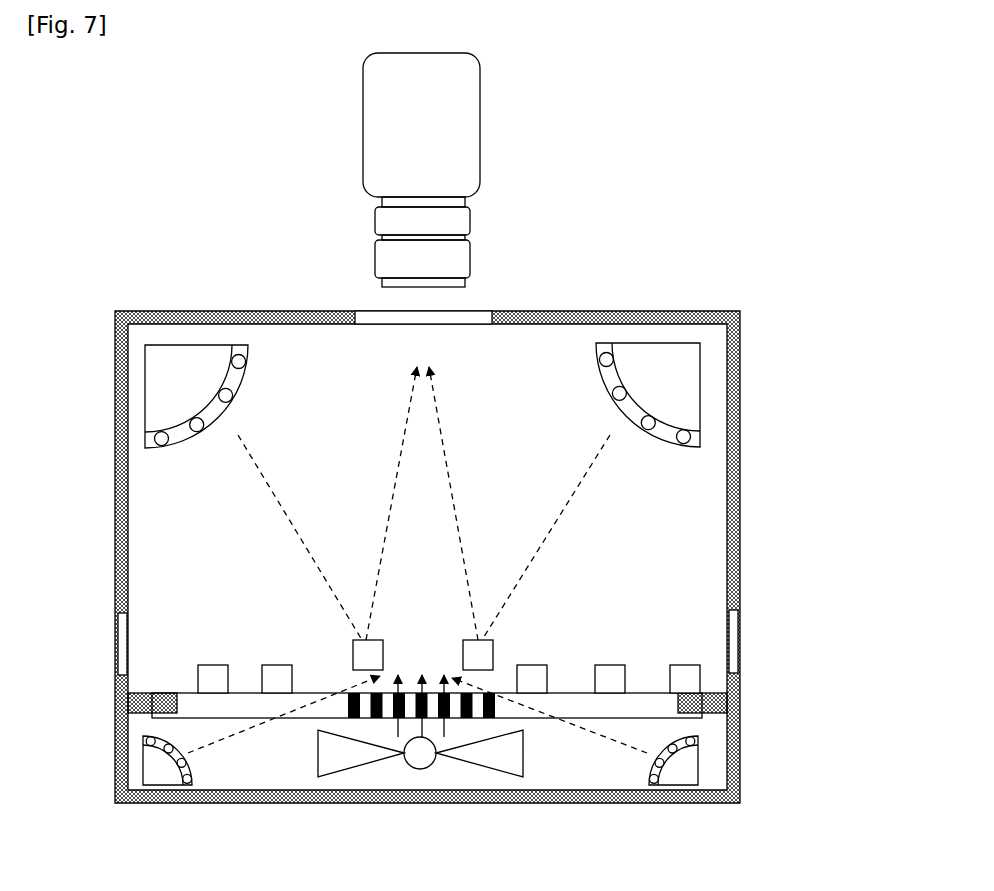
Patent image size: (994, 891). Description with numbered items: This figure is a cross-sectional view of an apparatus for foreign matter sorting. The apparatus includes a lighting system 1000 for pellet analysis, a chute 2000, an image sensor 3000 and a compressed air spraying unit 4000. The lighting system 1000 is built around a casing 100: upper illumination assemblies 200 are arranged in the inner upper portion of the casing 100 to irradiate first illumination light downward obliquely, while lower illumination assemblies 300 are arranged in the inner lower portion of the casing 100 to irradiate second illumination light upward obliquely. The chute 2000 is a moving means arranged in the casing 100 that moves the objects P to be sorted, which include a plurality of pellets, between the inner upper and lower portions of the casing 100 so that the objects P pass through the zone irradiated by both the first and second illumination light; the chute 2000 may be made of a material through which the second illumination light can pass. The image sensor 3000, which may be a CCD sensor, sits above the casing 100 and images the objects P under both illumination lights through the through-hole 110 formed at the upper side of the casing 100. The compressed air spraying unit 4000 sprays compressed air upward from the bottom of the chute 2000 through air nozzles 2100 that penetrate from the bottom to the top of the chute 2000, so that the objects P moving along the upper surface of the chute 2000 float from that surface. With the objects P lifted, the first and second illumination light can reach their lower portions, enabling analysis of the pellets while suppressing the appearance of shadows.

The lighting system 1000 is at (783, 266).
The image sensor 3000 is at (478, 125).
The casing 100 is at (647, 311).
The through-hole 110 is at (492, 318).
The upper illumination assemblies 200 is at (158, 378).
The lower illumination assemblies 300 is at (165, 768).
The chute 2000 is at (650, 692).
The air nozzles 2100 is at (348, 694).
The compressed air spraying unit 4000 is at (424, 756).
The objects P is at (387, 649).